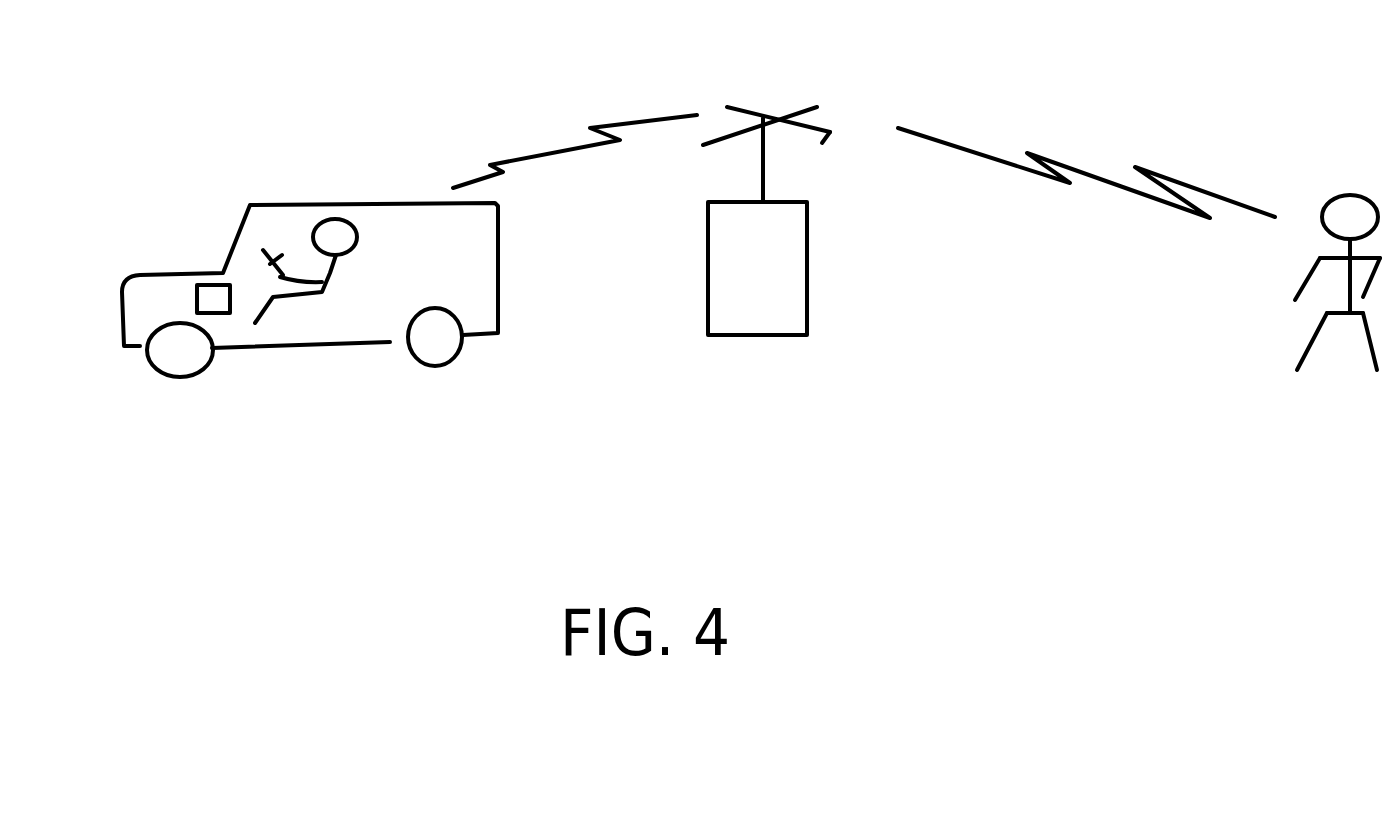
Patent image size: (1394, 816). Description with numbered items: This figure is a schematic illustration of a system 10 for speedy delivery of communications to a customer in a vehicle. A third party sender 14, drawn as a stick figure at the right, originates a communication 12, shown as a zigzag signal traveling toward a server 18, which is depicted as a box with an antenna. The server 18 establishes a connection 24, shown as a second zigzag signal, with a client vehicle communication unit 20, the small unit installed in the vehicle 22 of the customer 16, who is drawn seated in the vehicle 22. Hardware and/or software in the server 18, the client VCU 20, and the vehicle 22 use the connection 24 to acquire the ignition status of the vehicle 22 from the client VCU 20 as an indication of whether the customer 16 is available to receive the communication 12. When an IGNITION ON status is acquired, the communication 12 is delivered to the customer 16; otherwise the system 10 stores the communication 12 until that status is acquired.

The system 10 is at (940, 78).
The communication 12 is at (1130, 198).
The third party sender 14 is at (1290, 283).
The customer 16 is at (340, 218).
The server 18 is at (808, 250).
The client vehicle communication unit (VCU) 20 is at (210, 285).
The vehicle 22 is at (498, 275).
The connection 24 is at (587, 123).